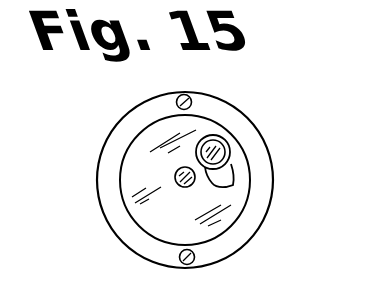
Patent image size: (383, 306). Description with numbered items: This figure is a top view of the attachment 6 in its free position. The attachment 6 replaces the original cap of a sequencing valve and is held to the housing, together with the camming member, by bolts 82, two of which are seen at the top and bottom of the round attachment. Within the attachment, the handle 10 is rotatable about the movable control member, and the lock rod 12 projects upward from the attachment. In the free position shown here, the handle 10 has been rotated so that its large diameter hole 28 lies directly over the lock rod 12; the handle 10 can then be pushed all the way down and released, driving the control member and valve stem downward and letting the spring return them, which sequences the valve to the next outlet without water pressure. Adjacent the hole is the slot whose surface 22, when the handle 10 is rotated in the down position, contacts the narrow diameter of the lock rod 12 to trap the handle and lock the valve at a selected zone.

The attachment 6 is at (98, 137).
The handle 10 is at (127, 186).
The bolts 82 is at (189, 98).
The lock rod 12 is at (217, 153).
The large diameter hole 28 is at (231, 148).
The surface 22 is at (231, 187).